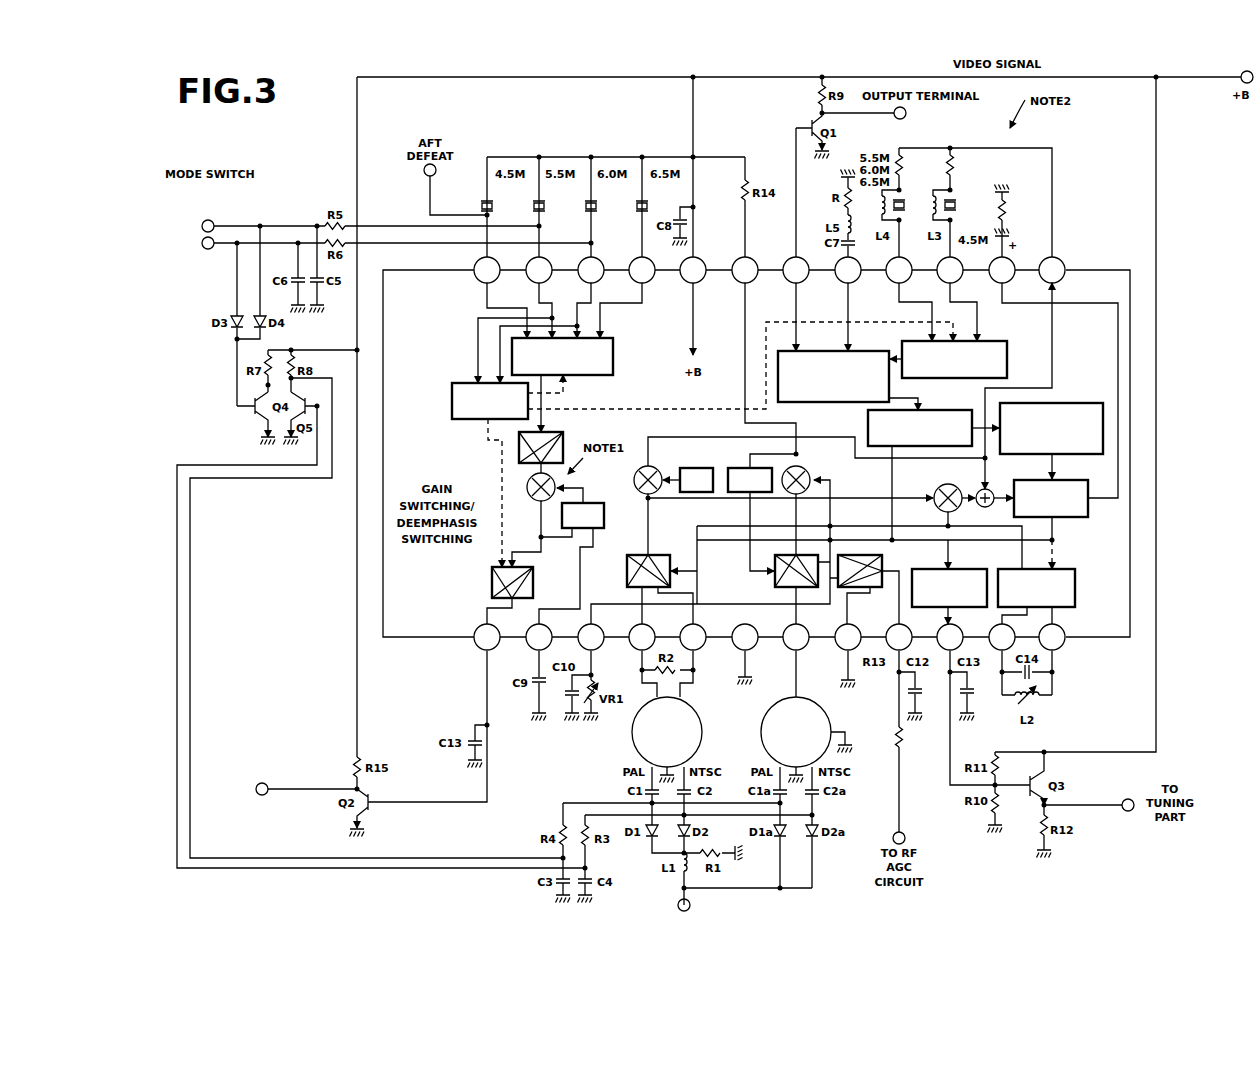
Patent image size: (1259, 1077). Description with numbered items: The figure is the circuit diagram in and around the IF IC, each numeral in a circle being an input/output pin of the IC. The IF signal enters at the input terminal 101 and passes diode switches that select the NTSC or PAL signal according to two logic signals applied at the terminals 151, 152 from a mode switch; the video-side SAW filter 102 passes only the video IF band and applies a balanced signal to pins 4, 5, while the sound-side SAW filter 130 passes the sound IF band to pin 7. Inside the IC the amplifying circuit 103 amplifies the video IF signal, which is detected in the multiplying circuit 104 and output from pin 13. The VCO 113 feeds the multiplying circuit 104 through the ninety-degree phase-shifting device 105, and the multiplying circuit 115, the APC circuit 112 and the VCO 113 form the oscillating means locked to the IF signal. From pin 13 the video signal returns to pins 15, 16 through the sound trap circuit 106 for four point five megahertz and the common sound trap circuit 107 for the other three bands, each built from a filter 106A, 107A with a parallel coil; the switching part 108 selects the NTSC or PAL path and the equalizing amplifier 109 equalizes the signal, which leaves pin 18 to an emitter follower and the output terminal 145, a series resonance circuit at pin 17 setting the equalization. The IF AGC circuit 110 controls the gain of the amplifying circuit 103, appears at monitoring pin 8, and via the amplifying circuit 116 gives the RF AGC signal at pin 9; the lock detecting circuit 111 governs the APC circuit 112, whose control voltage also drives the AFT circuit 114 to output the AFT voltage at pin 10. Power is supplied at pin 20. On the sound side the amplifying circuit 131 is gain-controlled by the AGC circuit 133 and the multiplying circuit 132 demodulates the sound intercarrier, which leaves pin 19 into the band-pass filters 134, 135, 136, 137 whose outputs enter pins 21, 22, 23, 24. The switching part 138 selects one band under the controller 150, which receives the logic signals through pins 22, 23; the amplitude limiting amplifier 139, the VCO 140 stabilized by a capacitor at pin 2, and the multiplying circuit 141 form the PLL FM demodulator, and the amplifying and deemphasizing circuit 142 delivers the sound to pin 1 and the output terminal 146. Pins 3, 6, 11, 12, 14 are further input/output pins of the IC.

The input terminal 101 is at (672, 909).
The SAW filter 102 is at (680, 723).
The amplifying circuit 103 is at (628, 575).
The multiplying circuit 104 is at (659, 466).
The 90-degree phase-shifting device 105 is at (706, 466).
The sound trap circuit 106 is at (972, 151).
The filter 106A is at (963, 196).
The common sound trap circuit 107 is at (917, 150).
The filter 107A is at (909, 196).
The video signal switching part 108 is at (965, 345).
The equalizing amplifier 109 is at (833, 392).
The IF AGC circuit 110 is at (920, 416).
The lock detecting circuit 111 is at (1051, 413).
The automatic phase control circuit (APC circuit) 112 is at (1061, 488).
The VCO 113 is at (1049, 577).
The AFT circuit 114 is at (956, 577).
The multiplying circuit 115 is at (927, 494).
The amplifying circuit 116 is at (882, 564).
The SAW filter 130 is at (794, 717).
The amplifying circuit 131 is at (775, 576).
The multiplying circuit 132 is at (809, 469).
The automatic gain control circuit (AGC circuit) 133 is at (757, 496).
The band-pass filter 134 is at (659, 197).
The band-pass filter 135 is at (606, 219).
The band-pass filter 136 is at (556, 219).
The band-pass filter 137 is at (470, 197).
The sound signal switching part 138 is at (584, 350).
The amplitude limiting amplifier 139 is at (558, 439).
The VCO 140 is at (595, 526).
The multiplying circuit 141 is at (529, 501).
The amplifying circuit and deemphasizing circuit 142 is at (530, 580).
The output terminal 145 is at (883, 113).
The output terminal 146 is at (293, 774).
The controller 150 is at (482, 420).
The input terminal 151 is at (196, 211).
The input terminal 152 is at (197, 261).
The IF IC pin 1 is at (487, 637).
The IF IC pin 2 is at (539, 637).
The IC pin 3 is at (591, 637).
The IF IC pin 4 is at (642, 637).
The IF IC pin 5 is at (693, 637).
The IC pin 6 is at (745, 637).
The IF IC pin 7 is at (796, 637).
The IF IC pin 8 is at (848, 637).
The IF IC pin 9 is at (899, 637).
The IF IC pin 10 is at (950, 637).
The IC pin 11 is at (1002, 637).
The IC pin 12 is at (1052, 637).
The IF IC pin 13 is at (1052, 270).
The IC pin 14 is at (1002, 270).
The IF IC pin 15 is at (950, 270).
The IF IC pin 16 is at (899, 270).
The IF IC pin 17 is at (848, 270).
The IF IC pin 18 is at (796, 270).
The IF IC pin 19 is at (745, 270).
The IF IC pin 20 is at (693, 270).
The IF IC pin 21 is at (642, 270).
The IF IC pin 22 is at (591, 270).
The IF IC pin 23 is at (539, 270).
The IF IC pin 24 is at (487, 270).